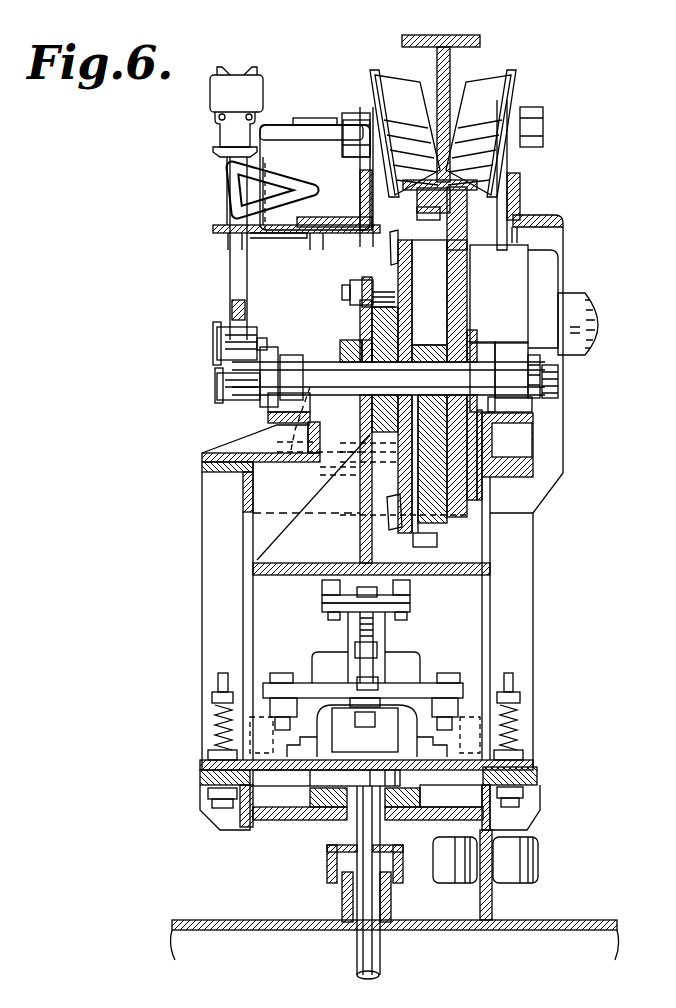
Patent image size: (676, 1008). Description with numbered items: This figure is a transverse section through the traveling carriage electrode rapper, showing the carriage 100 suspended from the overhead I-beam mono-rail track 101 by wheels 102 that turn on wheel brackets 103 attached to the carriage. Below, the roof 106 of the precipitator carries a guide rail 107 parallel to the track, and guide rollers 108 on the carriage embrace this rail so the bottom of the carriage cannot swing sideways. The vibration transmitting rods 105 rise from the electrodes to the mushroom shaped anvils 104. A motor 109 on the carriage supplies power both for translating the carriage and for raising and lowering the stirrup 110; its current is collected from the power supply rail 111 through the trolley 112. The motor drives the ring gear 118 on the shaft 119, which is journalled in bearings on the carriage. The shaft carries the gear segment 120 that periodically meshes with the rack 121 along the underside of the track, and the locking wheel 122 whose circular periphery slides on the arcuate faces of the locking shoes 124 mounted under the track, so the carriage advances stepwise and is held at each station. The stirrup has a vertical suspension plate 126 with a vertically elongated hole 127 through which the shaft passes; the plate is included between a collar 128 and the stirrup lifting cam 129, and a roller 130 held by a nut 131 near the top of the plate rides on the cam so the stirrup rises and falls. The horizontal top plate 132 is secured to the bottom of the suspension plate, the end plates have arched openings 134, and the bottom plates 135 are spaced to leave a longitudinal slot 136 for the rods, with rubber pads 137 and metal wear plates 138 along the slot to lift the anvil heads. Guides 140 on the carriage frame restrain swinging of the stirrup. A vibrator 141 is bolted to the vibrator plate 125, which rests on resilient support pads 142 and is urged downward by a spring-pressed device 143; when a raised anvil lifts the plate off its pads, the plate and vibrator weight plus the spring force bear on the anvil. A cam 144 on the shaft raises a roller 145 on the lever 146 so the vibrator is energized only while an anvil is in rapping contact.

The carriage 100 is at (534, 577).
The mono-rail track 101 is at (465, 38).
The wheels 102 is at (398, 82).
The wheel brackets 103 is at (507, 183).
The anvils 104 is at (400, 778).
The vibration transmitting rods 105 is at (354, 949).
The roof of the precipitator 106 is at (592, 922).
The guide rail 107 is at (493, 902).
The guide rollers 108 is at (538, 860).
The motor 109 is at (603, 322).
The stirrup 110 is at (270, 606).
The power supply rail 111 is at (213, 100).
The trolley 112 is at (229, 170).
The ring gear 118 is at (398, 252).
The shaft 119 is at (556, 380).
The gear segment 120 is at (432, 530).
The rack 121 is at (316, 174).
The locking wheel 122 is at (478, 494).
The locking shoes 124 is at (468, 203).
The vibrator plate 125 is at (533, 760).
The suspension plate 126 is at (362, 475).
The vertically elongated hole 127 is at (350, 344).
The collar 128 is at (338, 408).
The stirrup lifting cam 129 is at (392, 327).
The roller 130 is at (395, 285).
The nut 131 is at (355, 281).
The horizontal top plate 132 is at (312, 563).
The arched openings 134 is at (415, 712).
The bottom plates 135 is at (262, 826).
The longitudinal slot 136 is at (345, 855).
The rubber pads 137 is at (318, 812).
The wear plates 138 is at (420, 793).
The guides 140 is at (240, 815).
The vibrator 141 is at (402, 652).
The resilient support pads 142 is at (205, 777).
The spring-pressed device 143 is at (210, 755).
The cam 144 is at (222, 394).
The roller 145 is at (230, 342).
The lever 146 is at (240, 330).